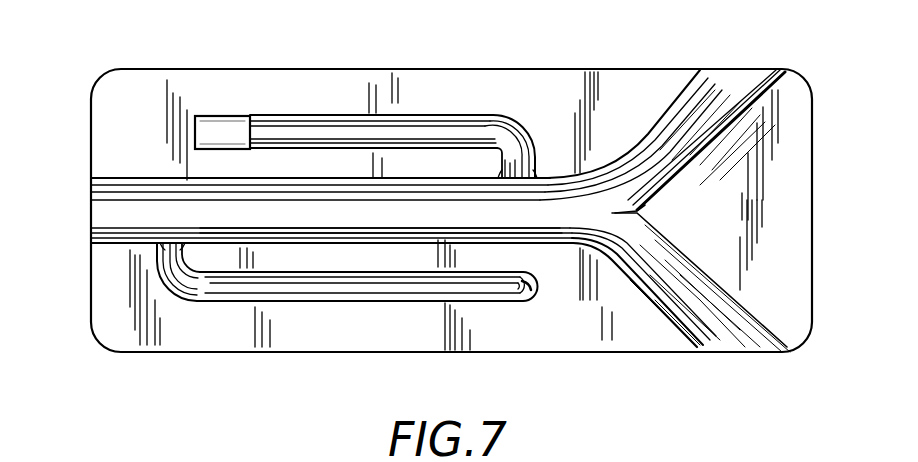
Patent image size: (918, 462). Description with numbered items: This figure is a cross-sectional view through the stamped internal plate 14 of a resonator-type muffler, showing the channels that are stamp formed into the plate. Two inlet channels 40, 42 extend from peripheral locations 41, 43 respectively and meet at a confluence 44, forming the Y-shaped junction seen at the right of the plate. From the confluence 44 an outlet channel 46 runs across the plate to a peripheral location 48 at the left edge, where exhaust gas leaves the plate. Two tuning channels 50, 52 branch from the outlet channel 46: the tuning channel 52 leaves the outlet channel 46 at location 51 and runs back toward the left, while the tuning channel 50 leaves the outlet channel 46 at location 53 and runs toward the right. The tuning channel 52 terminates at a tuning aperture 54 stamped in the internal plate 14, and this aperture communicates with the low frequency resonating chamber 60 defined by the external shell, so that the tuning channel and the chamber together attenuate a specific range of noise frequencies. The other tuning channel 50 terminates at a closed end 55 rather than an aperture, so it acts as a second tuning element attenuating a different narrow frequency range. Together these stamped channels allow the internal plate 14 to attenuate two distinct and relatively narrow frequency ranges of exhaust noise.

The internal plate 14 is at (140, 62).
The inlet channel 40 is at (660, 132).
The peripheral location 41 is at (757, 43).
The inlet channel 42 is at (725, 307).
The peripheral location 43 is at (745, 352).
The confluence 44 is at (605, 213).
The outlet channel 46 is at (293, 228).
The peripheral location 48 is at (91, 207).
The tuning channel 50 is at (352, 292).
The location 51 is at (510, 177).
The tuning channel 52 is at (315, 117).
The location 53 is at (173, 253).
The tuning aperture 54 is at (205, 120).
The closed end 55 is at (520, 302).
The low frequency resonating chamber 60 is at (226, 130).